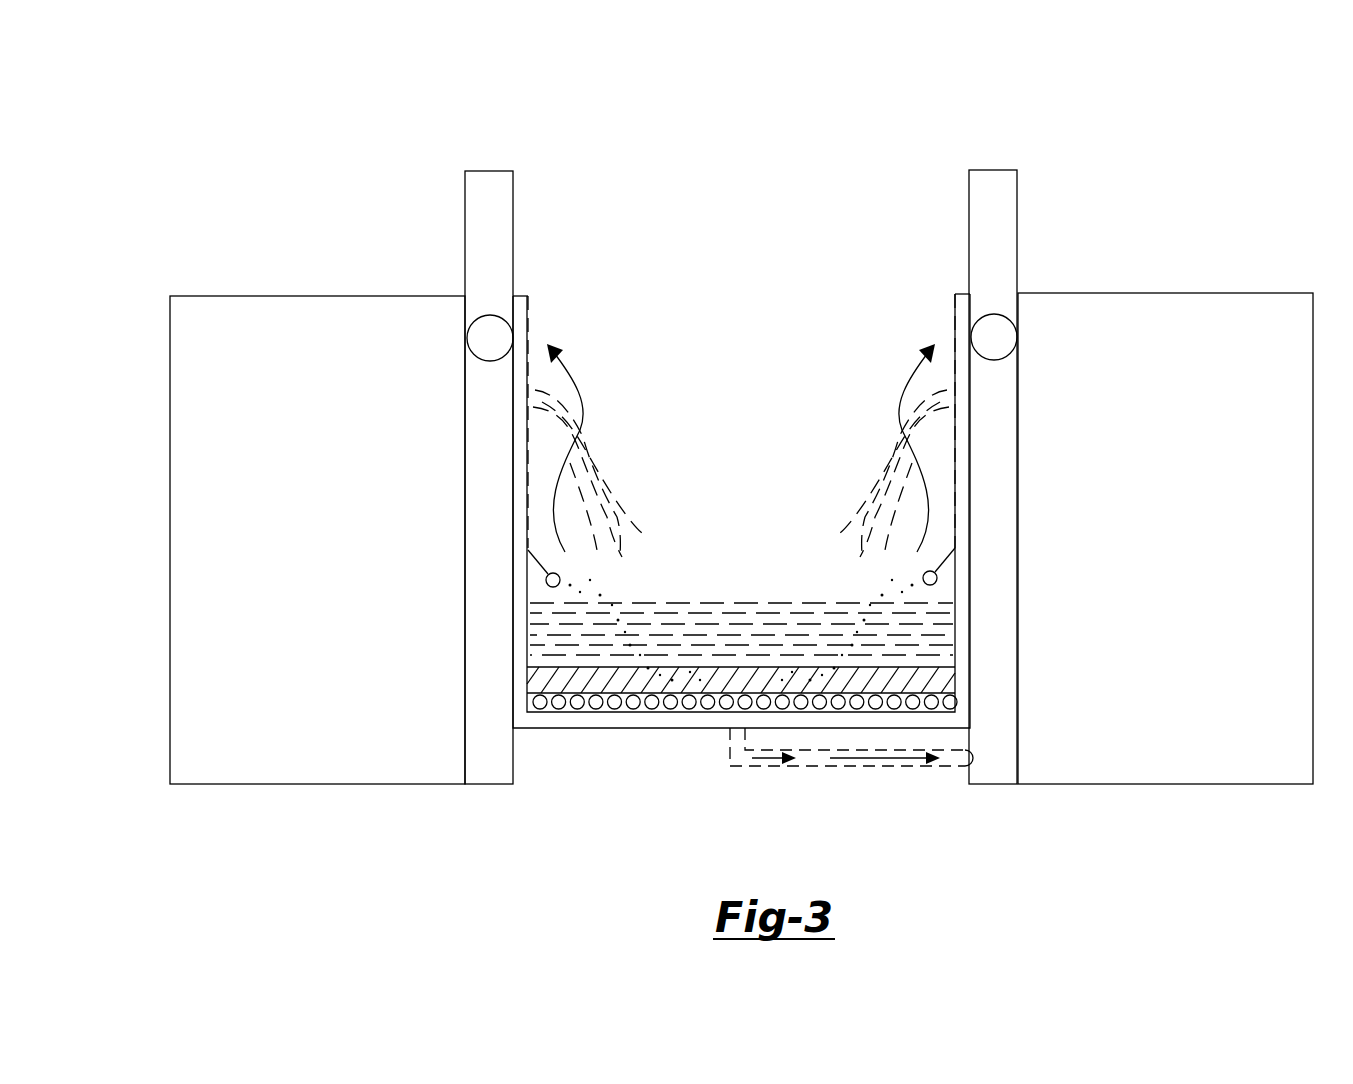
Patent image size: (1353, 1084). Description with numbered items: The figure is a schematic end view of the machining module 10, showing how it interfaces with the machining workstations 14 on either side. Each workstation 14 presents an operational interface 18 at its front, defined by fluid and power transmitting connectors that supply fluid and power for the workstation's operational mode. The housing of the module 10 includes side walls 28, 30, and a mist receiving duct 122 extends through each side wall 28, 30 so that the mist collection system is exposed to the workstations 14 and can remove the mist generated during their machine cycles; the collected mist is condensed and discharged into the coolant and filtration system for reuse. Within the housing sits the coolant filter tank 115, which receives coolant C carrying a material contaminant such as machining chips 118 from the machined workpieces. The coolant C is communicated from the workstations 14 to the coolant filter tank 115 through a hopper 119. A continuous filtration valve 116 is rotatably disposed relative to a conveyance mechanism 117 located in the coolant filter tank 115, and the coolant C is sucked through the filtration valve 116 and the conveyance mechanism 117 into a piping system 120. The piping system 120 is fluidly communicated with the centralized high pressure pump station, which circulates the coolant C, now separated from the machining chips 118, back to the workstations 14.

The machining module 10 is at (740, 210).
The workstation 14 is at (224, 288).
The operational interface 18 is at (530, 297).
The side wall 28 is at (487, 178).
The side wall 30 is at (995, 178).
The coolant filter tank 115 is at (525, 641).
The continuous filtration valve 116 is at (940, 678).
The conveyance mechanism 117 is at (626, 706).
The machining chips 118 is at (607, 600).
The hopper 119 is at (546, 578).
The piping system 120 is at (815, 762).
The mist receiving duct 122 is at (489, 313).
The coolant C is at (745, 625).